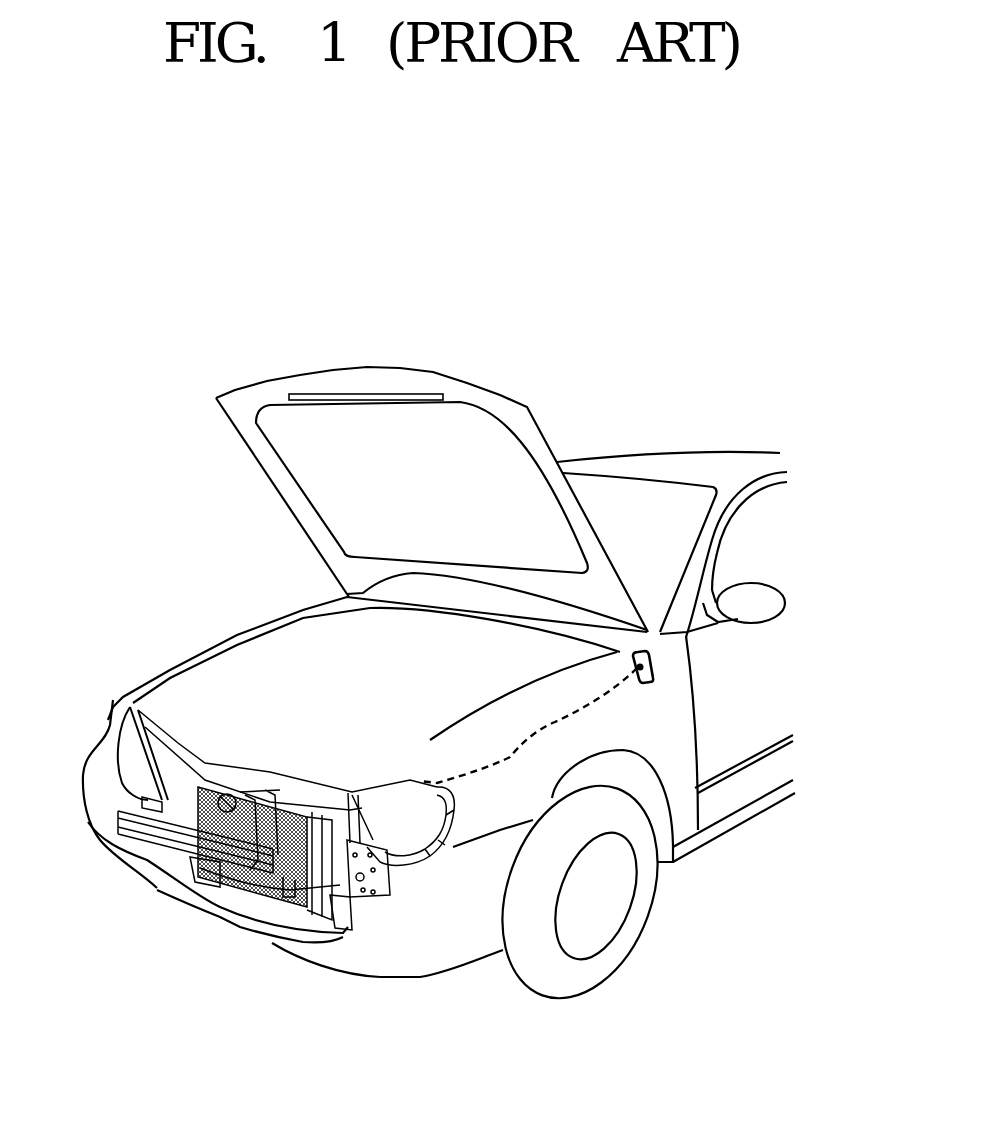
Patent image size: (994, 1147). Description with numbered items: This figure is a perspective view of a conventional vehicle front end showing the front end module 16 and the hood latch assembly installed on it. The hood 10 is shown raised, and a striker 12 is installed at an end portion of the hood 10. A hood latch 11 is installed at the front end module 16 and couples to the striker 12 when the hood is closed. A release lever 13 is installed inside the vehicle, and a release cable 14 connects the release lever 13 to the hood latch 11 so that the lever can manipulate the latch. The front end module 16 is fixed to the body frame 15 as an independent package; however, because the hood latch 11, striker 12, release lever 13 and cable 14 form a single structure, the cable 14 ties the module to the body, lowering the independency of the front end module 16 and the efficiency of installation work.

The hood 10 is at (487, 400).
The hood latch 11 is at (227, 808).
The striker 12 is at (358, 405).
The release lever 13 is at (652, 670).
The release cable 14 is at (513, 753).
The body frame 15 is at (247, 660).
The front end module 16 is at (148, 848).